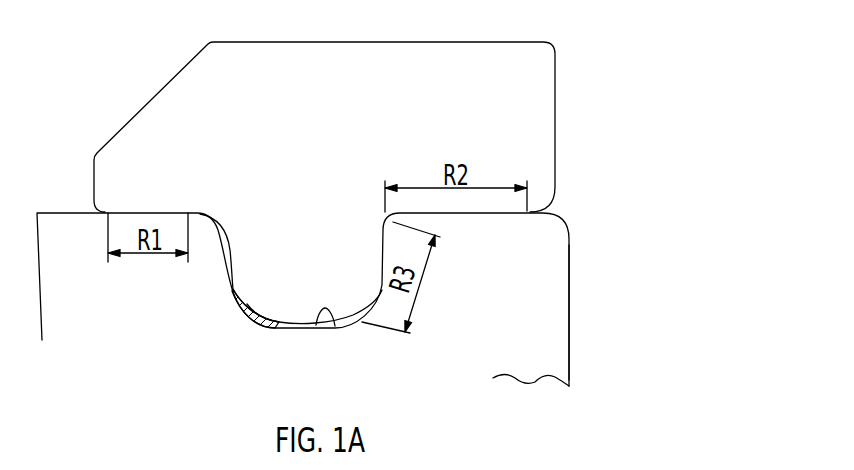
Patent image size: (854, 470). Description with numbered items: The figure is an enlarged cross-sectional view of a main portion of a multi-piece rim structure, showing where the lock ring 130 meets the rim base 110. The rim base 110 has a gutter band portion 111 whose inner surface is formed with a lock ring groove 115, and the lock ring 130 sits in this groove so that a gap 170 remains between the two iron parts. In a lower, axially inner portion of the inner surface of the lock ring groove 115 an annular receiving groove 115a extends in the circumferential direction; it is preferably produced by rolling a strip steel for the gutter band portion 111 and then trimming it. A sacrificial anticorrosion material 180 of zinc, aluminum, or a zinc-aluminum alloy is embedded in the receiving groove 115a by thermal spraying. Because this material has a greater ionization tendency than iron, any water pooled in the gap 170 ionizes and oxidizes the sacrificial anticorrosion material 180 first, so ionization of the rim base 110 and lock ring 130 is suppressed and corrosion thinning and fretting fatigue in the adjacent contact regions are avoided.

The lock ring 130 is at (562, 87).
The rim base 110 is at (569, 230).
The gutter band portion 111 is at (533, 293).
The gap 170 is at (230, 258).
The sacrificial anticorrosion material 180 is at (255, 313).
The receiving groove 115a is at (250, 329).
The lock ring groove 115 is at (337, 327).